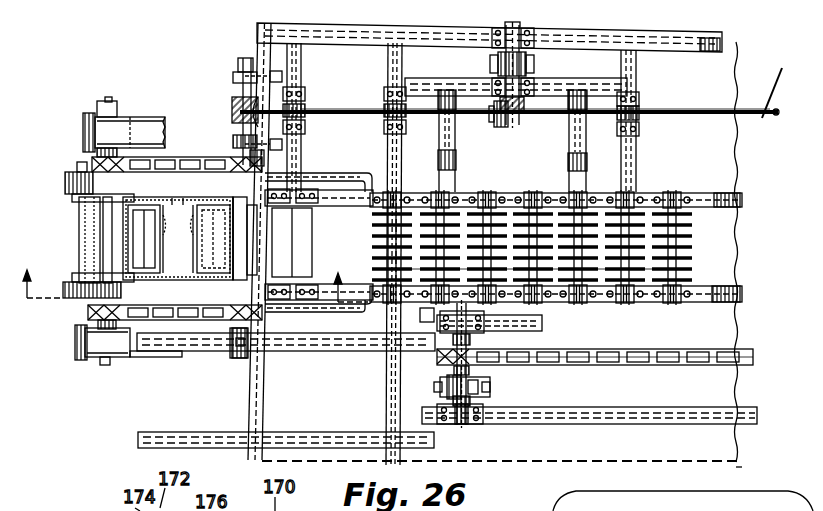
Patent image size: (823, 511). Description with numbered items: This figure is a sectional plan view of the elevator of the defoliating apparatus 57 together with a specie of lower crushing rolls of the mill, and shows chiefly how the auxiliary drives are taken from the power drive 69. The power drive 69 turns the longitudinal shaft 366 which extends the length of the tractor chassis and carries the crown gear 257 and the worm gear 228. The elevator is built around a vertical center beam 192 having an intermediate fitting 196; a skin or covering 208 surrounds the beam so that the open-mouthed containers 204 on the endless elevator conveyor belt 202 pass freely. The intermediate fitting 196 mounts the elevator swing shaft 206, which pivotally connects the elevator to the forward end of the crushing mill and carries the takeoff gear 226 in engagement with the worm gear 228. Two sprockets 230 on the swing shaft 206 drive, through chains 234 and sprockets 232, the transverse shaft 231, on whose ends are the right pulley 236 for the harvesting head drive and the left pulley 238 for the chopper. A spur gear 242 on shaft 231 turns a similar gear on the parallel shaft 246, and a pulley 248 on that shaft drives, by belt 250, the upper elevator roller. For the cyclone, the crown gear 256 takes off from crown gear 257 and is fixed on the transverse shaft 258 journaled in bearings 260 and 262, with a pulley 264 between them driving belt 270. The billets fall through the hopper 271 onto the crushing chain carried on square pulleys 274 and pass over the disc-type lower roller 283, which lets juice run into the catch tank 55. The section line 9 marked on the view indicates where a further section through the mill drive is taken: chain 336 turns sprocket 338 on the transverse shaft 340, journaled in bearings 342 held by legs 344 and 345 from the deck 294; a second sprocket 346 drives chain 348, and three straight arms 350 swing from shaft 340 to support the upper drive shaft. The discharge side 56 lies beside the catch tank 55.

The defoliating apparatus 57 is at (172, 198).
The vertical center beam 192 is at (183, 198).
The worm gear 228 is at (238, 94).
The takeoff gear 226 is at (230, 108).
The right pulley 236 is at (92, 115).
The sprockets 232 is at (92, 156).
The pulley 248 is at (68, 168).
The belt 250 is at (64, 184).
The intermediate fitting 196 is at (72, 201).
The shaft 246 is at (80, 256).
The section line 9- 9 is at (195, 272).
The skin or covering 208 is at (143, 204).
The endless elevator conveyor belt 202 is at (200, 205).
The open-mouthed containers 204 is at (126, 217).
The spur gear 242 is at (120, 294).
The chains 234 is at (194, 160).
The sprockets 230 is at (240, 158).
The left pulley 238 is at (85, 359).
The transverse shaft 231 is at (105, 367).
The elevator swing shaft 206 is at (238, 360).
The bearing 260 is at (508, 28).
The transverse shaft 258 is at (521, 30).
The pulley 264 is at (498, 62).
The belt 270 is at (493, 67).
The bearing 262 is at (523, 82).
The crown gear 256 is at (518, 104).
The crown gear 257 is at (498, 128).
The longitudinal shaft 366 is at (653, 115).
The power drive 69 is at (806, 67).
The hopper 271 is at (355, 168).
The square pulleys 274 is at (308, 232).
The lower roller 283 is at (692, 228).
The catch tank 55 is at (723, 267).
The bearings 342 is at (440, 337).
The leg 344 is at (542, 327).
The straight arms 350 is at (470, 337).
The second sprocket 346 is at (455, 380).
The endless chain 348 is at (453, 387).
The sprocket 338 is at (468, 367).
The endless chain 336 is at (600, 362).
The transverse shaft 340 is at (462, 425).
The leg 345 is at (622, 422).
The deck 294 is at (750, 440).
The discharge conveyor 56 is at (727, 391).